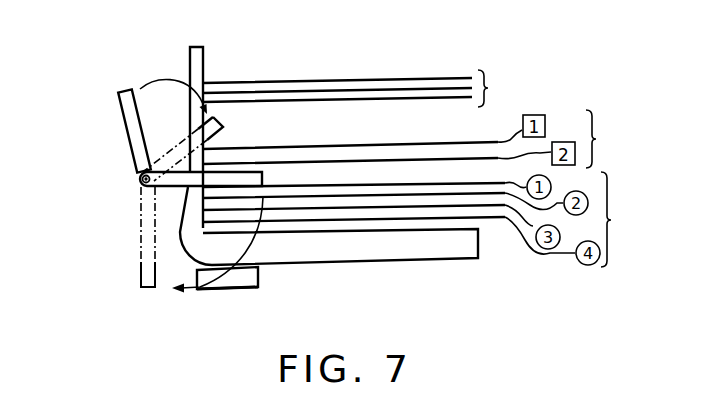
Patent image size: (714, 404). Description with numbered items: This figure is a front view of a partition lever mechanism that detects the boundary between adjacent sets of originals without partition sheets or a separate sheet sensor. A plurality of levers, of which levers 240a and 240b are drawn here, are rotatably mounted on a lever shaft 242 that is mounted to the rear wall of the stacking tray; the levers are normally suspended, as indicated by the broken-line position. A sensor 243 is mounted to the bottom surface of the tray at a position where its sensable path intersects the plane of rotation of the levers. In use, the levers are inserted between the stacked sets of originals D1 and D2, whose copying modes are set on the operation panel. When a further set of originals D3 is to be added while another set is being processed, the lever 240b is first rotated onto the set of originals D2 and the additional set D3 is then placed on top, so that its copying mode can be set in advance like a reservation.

The lever 240a is at (235, 178).
The lever 240b is at (128, 133).
The lever shaft 242 is at (141, 181).
The sensor 243 is at (252, 278).
The set of originals D1 is at (620, 219).
The set of originals D2 is at (604, 139).
The additional set of originals D3 is at (497, 88).